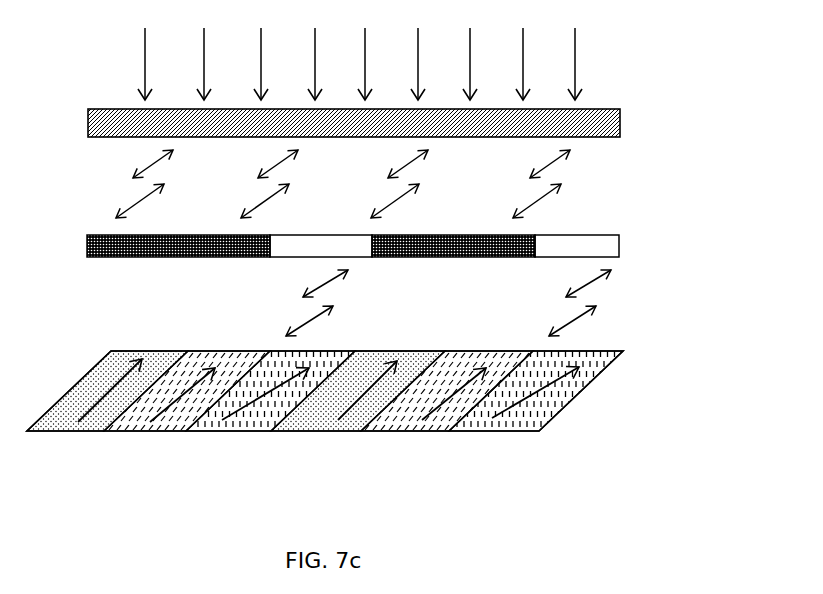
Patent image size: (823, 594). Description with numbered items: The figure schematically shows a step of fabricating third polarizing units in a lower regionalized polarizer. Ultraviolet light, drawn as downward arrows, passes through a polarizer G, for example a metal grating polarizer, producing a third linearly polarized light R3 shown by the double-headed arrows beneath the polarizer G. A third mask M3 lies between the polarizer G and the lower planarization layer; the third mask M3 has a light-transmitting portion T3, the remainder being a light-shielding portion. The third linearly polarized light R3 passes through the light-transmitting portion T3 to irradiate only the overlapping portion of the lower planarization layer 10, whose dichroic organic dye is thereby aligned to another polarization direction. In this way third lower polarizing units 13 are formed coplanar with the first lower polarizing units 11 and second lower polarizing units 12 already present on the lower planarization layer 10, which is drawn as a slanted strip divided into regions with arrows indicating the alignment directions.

The polarizer G is at (585, 113).
The third linearly polarized light R3 is at (582, 185).
The third mask M3 is at (399, 222).
The light-transmitting portion T3 is at (444, 231).
The optical film (314) 10 is at (389, 395).
The first lower polarizing units 11 is at (340, 410).
The second lower polarizing units 12 is at (423, 395).
The third lower polarizing units 13 is at (507, 395).